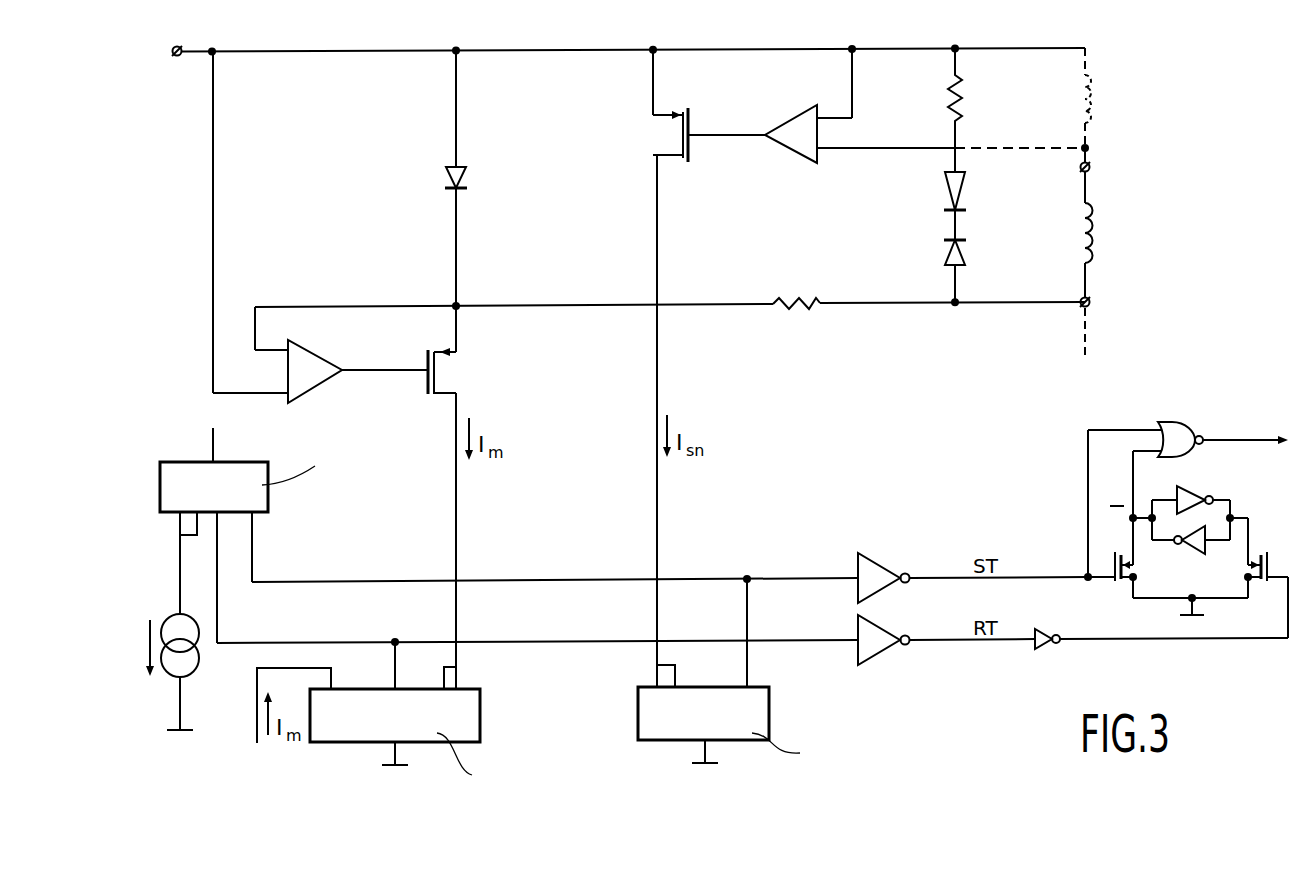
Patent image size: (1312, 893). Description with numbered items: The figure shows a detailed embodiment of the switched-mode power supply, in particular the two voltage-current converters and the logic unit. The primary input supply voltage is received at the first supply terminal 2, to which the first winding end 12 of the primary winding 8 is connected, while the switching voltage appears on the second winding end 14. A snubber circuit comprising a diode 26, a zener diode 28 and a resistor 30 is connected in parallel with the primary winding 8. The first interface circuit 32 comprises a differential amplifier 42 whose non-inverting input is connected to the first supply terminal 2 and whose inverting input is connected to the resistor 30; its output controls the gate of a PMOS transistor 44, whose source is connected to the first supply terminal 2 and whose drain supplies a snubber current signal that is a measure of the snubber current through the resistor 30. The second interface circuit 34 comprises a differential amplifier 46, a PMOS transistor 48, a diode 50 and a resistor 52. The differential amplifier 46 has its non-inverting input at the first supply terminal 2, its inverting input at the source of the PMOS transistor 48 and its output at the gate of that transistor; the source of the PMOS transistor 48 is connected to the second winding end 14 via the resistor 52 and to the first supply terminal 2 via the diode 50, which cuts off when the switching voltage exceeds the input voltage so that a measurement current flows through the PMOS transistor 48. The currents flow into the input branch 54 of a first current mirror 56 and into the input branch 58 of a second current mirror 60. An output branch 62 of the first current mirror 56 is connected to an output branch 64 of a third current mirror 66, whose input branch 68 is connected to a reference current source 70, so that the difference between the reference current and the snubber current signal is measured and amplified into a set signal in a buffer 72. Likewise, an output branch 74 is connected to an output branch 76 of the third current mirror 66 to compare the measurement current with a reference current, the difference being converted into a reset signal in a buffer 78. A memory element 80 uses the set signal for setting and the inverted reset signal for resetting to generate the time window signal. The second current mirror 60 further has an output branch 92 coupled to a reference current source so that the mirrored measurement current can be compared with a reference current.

The first supply terminal 2 is at (179, 56).
The primary winding 8 is at (1093, 237).
The first winding end 12 is at (1090, 166).
The second winding end 14 is at (1090, 302).
The diode 26 is at (947, 250).
The zener diode 28 is at (949, 183).
The resistor 30 is at (962, 97).
The first interface circuit 32 is at (785, 127).
The second interface circuit 34 is at (363, 366).
The differential amplifier 42 is at (800, 163).
The PMOS transistor 44 is at (676, 132).
The differential amplifier 46 is at (318, 388).
The PMOS transistor 48 is at (440, 373).
The diode 50 is at (466, 180).
The resistor 52 is at (801, 311).
The input branch 54 is at (655, 684).
The first current mirror 56 is at (771, 720).
The input branch 58 is at (460, 688).
The second current mirror 60 is at (482, 720).
The output branch 62 is at (750, 686).
The output branch 64 is at (253, 514).
The third current mirror 66 is at (252, 461).
The input branch 68 is at (175, 516).
The reference current source 70 is at (200, 660).
The buffer 72 is at (878, 566).
The output branch 74 is at (397, 688).
The output branch 76 is at (218, 514).
The buffer 78 is at (878, 660).
The memory element 80 is at (1188, 587).
The output branch 92 is at (333, 688).